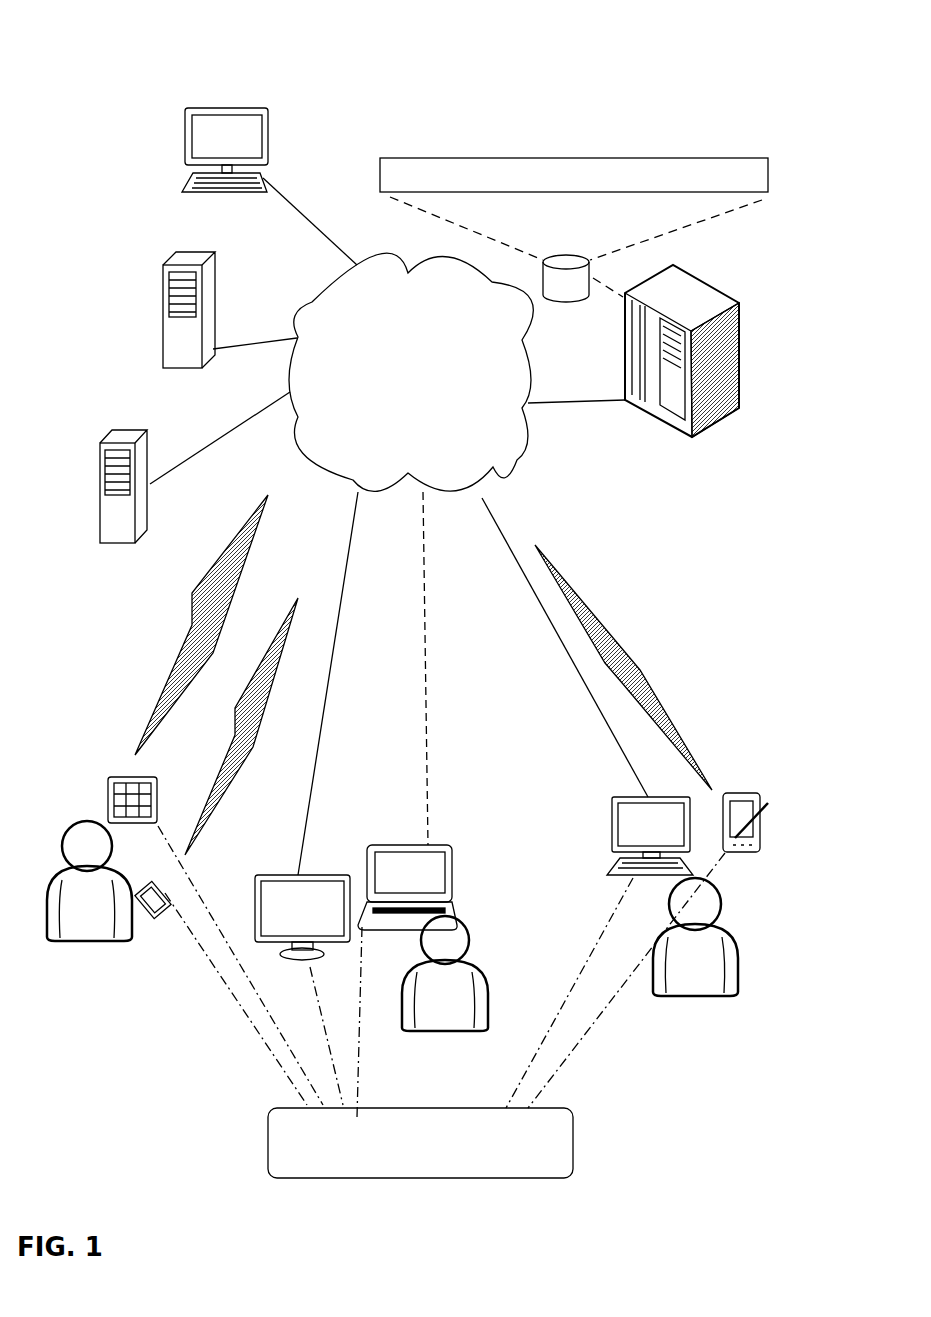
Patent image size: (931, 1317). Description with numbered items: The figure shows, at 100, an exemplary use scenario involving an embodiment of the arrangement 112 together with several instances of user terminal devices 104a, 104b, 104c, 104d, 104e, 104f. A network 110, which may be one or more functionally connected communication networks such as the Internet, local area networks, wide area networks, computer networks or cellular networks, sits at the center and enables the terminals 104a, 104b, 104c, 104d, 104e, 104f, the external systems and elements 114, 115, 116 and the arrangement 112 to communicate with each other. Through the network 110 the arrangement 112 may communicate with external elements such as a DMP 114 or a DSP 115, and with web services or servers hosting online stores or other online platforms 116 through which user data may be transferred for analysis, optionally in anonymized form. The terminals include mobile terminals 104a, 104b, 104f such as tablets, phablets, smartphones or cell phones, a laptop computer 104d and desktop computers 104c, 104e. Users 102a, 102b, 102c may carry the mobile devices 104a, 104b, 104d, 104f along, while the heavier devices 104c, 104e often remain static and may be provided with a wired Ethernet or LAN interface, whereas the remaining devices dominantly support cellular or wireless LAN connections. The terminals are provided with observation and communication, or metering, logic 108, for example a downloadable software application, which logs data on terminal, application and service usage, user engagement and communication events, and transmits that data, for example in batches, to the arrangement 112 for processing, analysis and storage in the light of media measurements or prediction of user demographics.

The use scenario 100 is at (50, 27).
The user 102a is at (87, 822).
The user 102b is at (476, 960).
The user 102c is at (653, 935).
The mobile terminal 104a is at (172, 771).
The mobile terminal 104b is at (158, 905).
The desktop computer 104c is at (283, 885).
The laptop computer 104d is at (422, 845).
The desktop computer 104e is at (612, 807).
The mobile terminal 104f is at (740, 800).
The metering logic 108 is at (574, 1122).
The network 110 is at (311, 304).
The arrangement 112 is at (712, 431).
The DMP 114 is at (97, 527).
The DSP 115 is at (163, 347).
The external system 116 is at (217, 117).